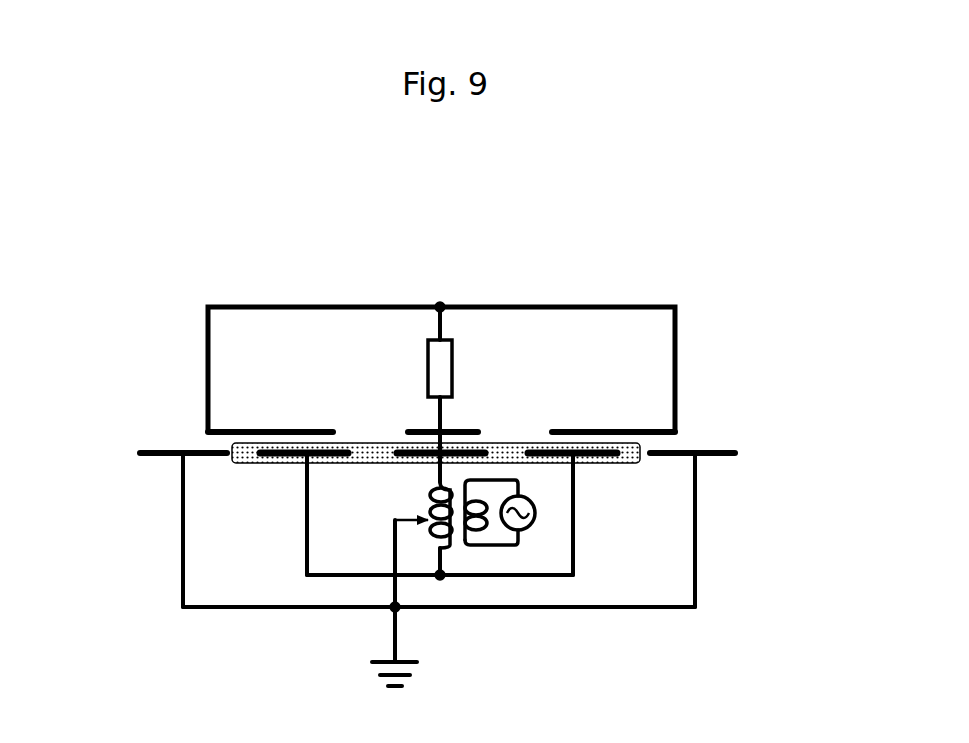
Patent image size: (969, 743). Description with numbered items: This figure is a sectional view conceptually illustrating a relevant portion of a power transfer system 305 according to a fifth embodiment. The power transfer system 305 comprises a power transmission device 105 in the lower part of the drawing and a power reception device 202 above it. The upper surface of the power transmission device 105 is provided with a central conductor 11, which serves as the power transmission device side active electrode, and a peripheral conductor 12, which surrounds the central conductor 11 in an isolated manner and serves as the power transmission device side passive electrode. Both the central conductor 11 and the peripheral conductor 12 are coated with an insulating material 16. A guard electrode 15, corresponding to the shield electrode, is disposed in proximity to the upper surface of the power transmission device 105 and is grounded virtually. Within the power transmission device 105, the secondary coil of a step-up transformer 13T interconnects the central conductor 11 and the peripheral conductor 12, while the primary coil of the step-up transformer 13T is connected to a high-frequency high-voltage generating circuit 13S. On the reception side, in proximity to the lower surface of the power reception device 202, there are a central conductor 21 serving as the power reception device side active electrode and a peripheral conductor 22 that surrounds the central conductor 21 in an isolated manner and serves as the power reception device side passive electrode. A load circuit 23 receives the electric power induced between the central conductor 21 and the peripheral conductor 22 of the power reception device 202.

The power transfer system 305 is at (784, 216).
The power reception device 202 is at (142, 347).
The power transmission device 105 is at (132, 578).
The peripheral conductor 22 is at (675, 307).
The load circuit 23 is at (430, 370).
The central conductor 21 is at (467, 428).
The insulating material 16 is at (373, 446).
The peripheral conductor 12 is at (285, 455).
The central conductor 11 is at (410, 455).
The guard electrode 15 is at (155, 455).
The step-up transformer 13T is at (458, 538).
The high-frequency high-voltage generating circuit 13S is at (536, 513).